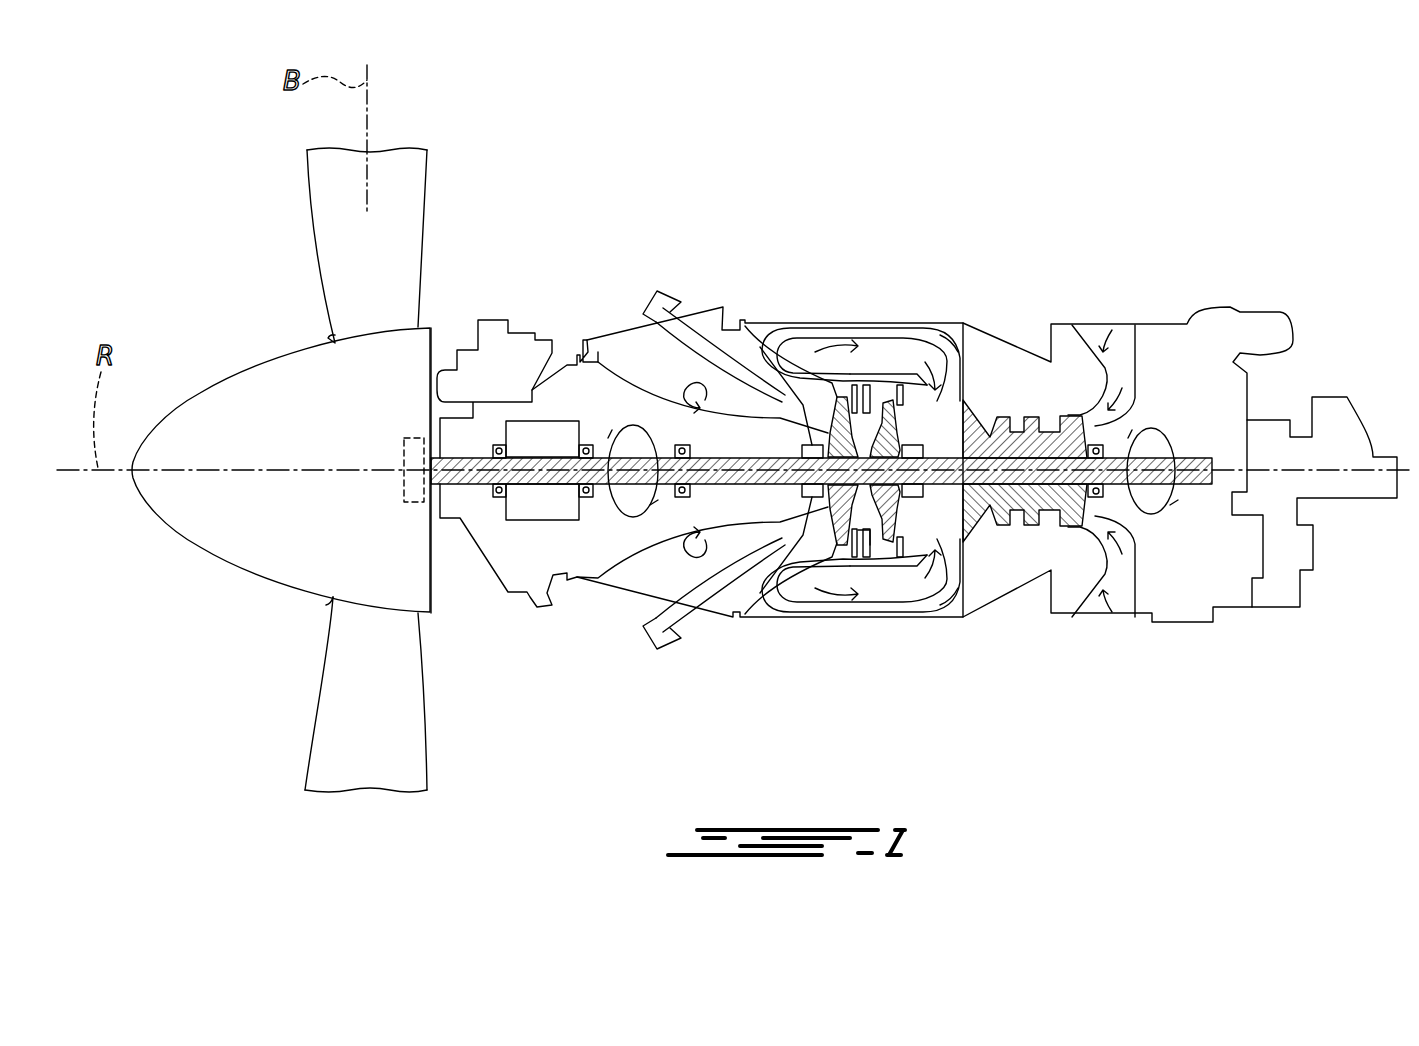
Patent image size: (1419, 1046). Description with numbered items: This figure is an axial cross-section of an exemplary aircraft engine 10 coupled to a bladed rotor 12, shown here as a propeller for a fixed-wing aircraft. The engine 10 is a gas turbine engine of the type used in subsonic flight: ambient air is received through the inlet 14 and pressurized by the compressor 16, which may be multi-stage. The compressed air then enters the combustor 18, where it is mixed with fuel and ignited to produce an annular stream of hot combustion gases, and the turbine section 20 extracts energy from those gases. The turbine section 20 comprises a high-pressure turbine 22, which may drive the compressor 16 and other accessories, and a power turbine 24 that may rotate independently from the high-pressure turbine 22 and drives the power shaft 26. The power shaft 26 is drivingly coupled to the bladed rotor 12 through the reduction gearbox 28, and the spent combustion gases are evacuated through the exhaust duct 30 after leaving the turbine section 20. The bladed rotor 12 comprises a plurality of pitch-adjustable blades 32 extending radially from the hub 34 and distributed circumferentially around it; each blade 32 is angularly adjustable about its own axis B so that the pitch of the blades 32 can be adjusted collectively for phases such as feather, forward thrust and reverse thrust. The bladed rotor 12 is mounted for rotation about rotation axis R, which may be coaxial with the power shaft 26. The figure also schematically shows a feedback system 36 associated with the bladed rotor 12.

The aircraft engine 10 is at (1073, 188).
The bladed rotor 12 is at (263, 201).
The inlet 14 is at (1118, 345).
The compressor 16 is at (1013, 410).
The combustor 18 is at (865, 360).
The turbine section 20 is at (862, 548).
The high-pressure turbine 22 is at (890, 400).
The power turbine 24 is at (837, 395).
The power shaft 26 is at (598, 452).
The reduction gearbox 28 is at (538, 520).
The exhaust duct 30 is at (623, 352).
The pitch-adjustable blades 32 is at (337, 233).
The hub 34 is at (238, 518).
The feedback system 36 is at (405, 452).